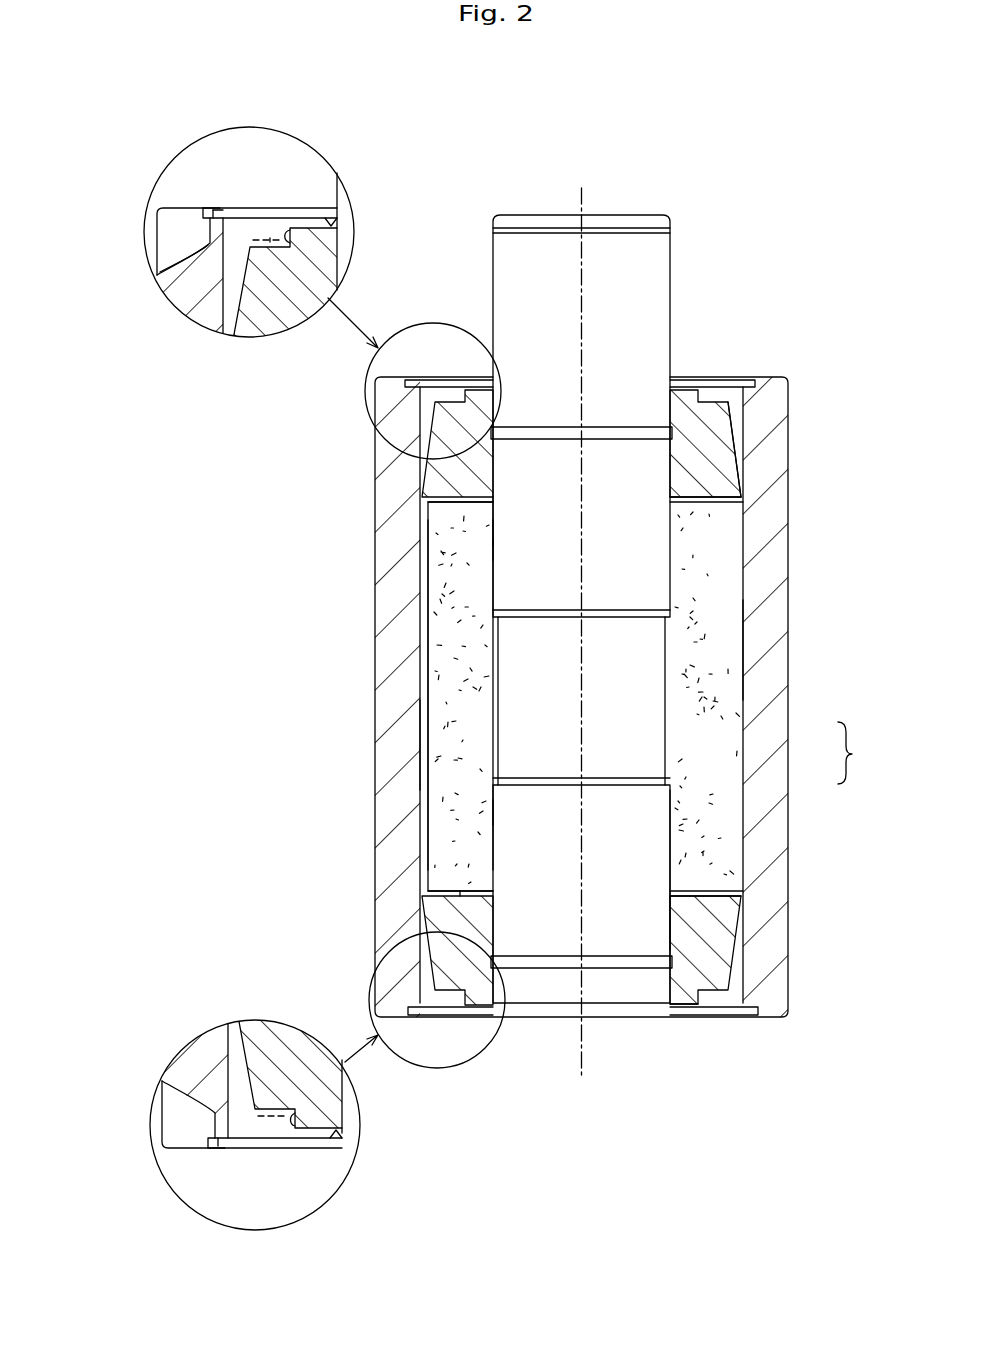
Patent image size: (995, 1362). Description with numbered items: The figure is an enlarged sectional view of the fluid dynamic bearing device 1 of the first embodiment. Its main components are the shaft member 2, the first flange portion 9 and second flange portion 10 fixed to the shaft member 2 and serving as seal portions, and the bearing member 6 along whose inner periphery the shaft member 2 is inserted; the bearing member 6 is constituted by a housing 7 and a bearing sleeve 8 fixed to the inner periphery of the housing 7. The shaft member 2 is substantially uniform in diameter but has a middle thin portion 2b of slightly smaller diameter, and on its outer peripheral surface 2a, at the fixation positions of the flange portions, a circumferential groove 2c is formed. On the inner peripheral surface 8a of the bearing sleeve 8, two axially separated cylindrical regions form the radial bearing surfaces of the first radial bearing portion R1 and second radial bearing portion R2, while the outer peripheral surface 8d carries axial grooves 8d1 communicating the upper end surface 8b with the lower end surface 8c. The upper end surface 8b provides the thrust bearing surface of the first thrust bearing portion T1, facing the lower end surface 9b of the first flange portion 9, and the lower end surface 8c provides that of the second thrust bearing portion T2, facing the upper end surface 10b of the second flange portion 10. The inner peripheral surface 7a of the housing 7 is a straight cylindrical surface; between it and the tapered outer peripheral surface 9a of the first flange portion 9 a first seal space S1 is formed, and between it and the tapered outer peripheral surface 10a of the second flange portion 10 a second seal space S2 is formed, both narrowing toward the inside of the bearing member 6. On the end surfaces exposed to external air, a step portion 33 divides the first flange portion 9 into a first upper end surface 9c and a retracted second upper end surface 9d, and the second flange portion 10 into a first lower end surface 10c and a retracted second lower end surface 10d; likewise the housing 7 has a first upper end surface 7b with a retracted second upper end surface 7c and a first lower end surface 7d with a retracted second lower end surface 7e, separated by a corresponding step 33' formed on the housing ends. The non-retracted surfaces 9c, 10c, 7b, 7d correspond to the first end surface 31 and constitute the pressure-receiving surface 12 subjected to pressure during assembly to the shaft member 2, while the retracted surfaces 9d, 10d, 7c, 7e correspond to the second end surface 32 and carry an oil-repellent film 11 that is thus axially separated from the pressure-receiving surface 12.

The fluid dynamic bearing device 1 is at (735, 237).
The shaft member 2 is at (627, 202).
The outer peripheral surface 2a is at (672, 824).
The thin portion 2b is at (668, 690).
The circumferential groove 2c is at (627, 430).
The bearing member 6 is at (852, 753).
The housing 7 is at (768, 734).
The inner peripheral surface 7a is at (746, 640).
The first upper end surface 7b is at (177, 205).
The second upper end surface 7c is at (203, 210).
The first lower end surface 7d is at (180, 1147).
The second lower end surface 7e is at (223, 1150).
The bearing sleeve 8 is at (718, 770).
The inner peripheral surface 8a is at (478, 579).
The upper end surface 8b is at (430, 501).
The lower end surface 8c is at (448, 906).
The outer peripheral surface 8d is at (424, 685).
The axial groove 8d1 is at (423, 738).
The first flange portion 9 is at (710, 452).
The outer peripheral surface 9a is at (735, 408).
The lower end surface 9b is at (722, 500).
The first upper end surface 9c is at (303, 220).
The second upper end surface 9d is at (280, 228).
The second flange portion 10 is at (712, 926).
The outer peripheral surface 10a is at (700, 968).
The upper end surface 10b is at (716, 876).
The first lower end surface 10c is at (313, 1137).
The second lower end surface 10d is at (290, 1137).
The oil-repellent film 11 is at (270, 242).
The pressure-receiving surface 12 is at (435, 686).
The first end surface 31 is at (173, 208).
The second end surface 32 is at (285, 687).
The step portion 33 is at (344, 678).
The protrusion (housing side) 33' is at (152, 679).
The first radial bearing portion R1 is at (507, 547).
The second radial bearing portion R2 is at (479, 818).
The first seal space S1 is at (425, 385).
The second seal space S2 is at (428, 975).
The first thrust bearing portion T1 is at (503, 540).
The second thrust bearing portion T2 is at (465, 882).